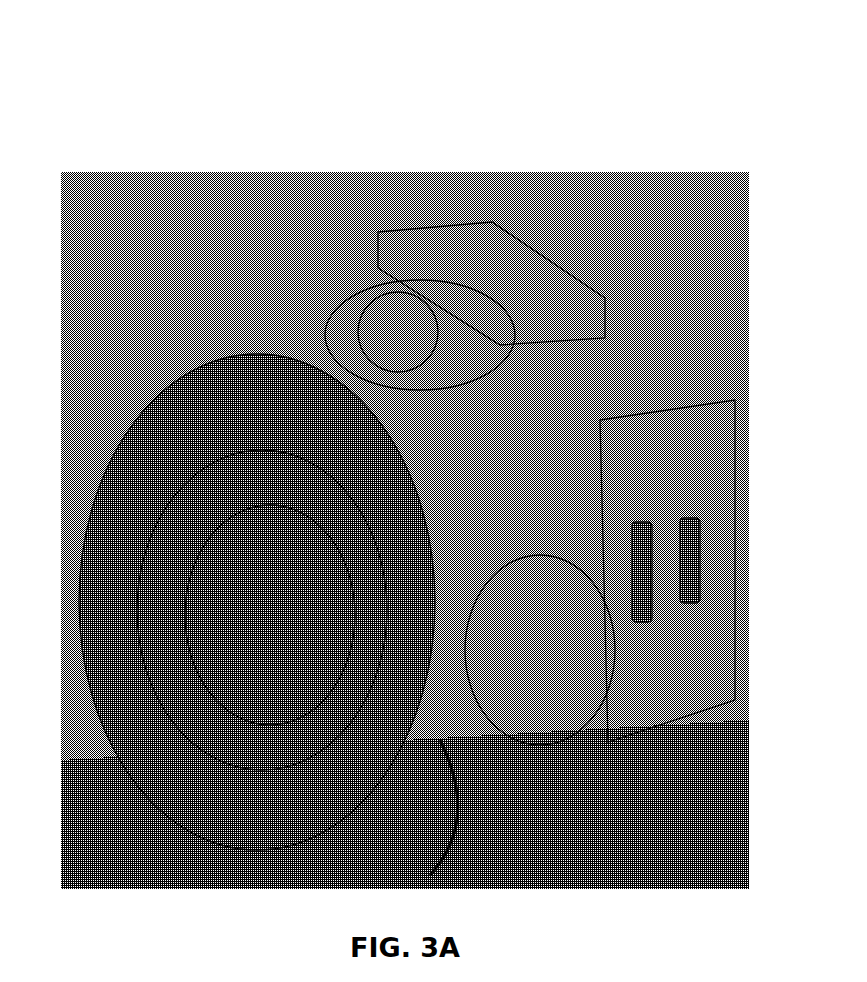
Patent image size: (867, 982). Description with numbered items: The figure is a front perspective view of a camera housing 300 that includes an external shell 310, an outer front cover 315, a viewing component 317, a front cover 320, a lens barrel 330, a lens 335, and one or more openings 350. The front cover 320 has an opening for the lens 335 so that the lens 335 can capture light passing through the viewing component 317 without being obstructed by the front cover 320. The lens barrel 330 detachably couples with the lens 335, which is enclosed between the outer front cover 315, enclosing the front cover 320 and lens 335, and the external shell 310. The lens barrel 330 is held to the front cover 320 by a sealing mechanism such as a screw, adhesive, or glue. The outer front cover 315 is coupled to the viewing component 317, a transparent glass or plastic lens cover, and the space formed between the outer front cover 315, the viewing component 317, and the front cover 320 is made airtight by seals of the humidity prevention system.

The camera housing 300 is at (408, 488).
The external shell 310 is at (212, 273).
The outer front cover 315 is at (357, 848).
The viewing component 317 is at (320, 808).
The front cover 320 is at (433, 852).
The lens barrel 330 is at (452, 472).
The lens 335 is at (243, 595).
The openings 350 is at (546, 522).